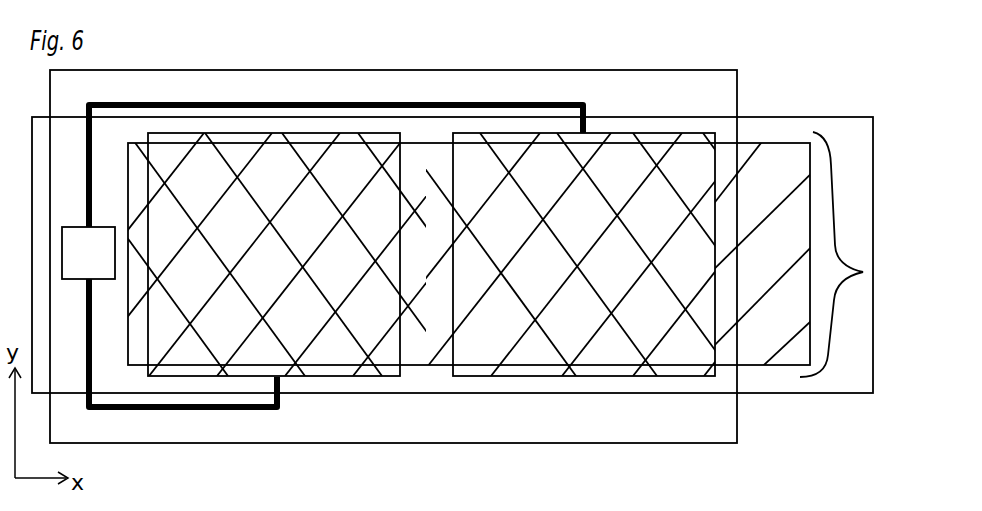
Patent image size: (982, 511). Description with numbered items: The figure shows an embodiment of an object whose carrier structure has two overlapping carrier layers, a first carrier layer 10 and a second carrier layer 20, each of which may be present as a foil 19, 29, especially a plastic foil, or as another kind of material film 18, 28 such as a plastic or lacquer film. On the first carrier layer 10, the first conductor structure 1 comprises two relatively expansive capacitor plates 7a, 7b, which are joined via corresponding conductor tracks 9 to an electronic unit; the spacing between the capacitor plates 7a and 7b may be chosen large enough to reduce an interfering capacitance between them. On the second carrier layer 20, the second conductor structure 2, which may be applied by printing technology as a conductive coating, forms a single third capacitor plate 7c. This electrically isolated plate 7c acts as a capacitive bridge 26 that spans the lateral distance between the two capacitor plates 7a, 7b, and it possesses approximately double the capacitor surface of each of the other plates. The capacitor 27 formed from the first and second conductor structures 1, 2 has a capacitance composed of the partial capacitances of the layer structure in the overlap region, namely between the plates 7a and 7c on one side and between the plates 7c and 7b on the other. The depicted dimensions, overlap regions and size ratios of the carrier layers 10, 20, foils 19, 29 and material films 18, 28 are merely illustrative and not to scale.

The first conductor structure 1 is at (454, 306).
The capacitor plate 7a is at (313, 377).
The capacitor plate 7b is at (470, 377).
The conductor track 9 is at (112, 413).
The second conductor structure 2 is at (512, 290).
The third capacitor plate 7c is at (512, 290).
The capacitive bridge 26 is at (753, 365).
The first carrier layer 10 is at (409, 236).
The first material film 18 is at (409, 236).
The first foil 19 is at (617, 79).
The second carrier layer 20 is at (474, 235).
The second material film 28 is at (474, 235).
The second foil 29 is at (756, 126).
The capacitor 27 is at (861, 254).